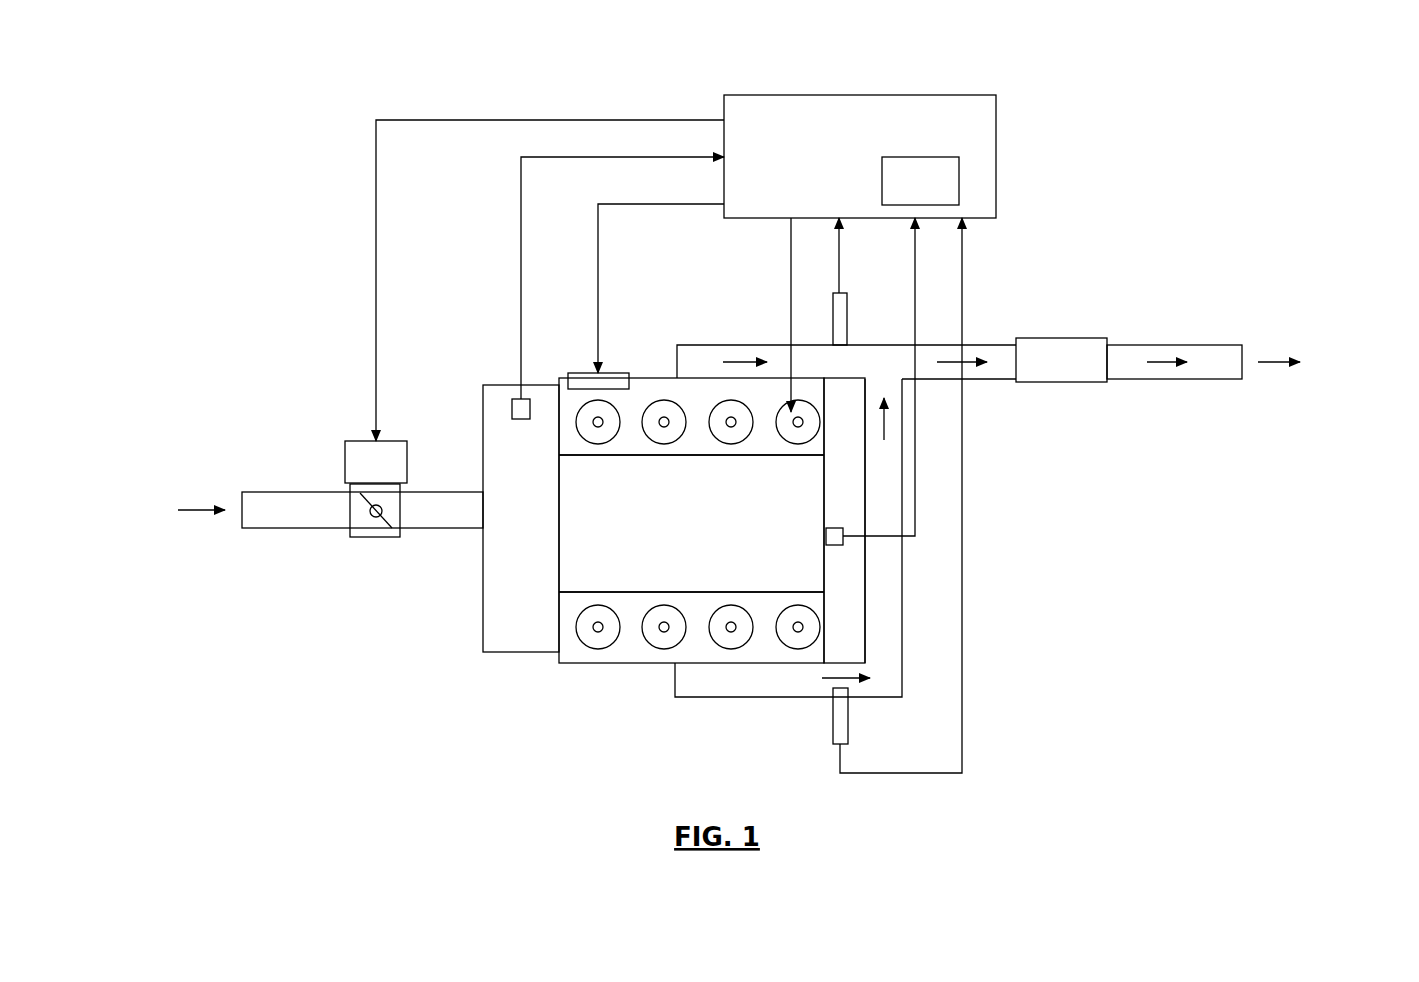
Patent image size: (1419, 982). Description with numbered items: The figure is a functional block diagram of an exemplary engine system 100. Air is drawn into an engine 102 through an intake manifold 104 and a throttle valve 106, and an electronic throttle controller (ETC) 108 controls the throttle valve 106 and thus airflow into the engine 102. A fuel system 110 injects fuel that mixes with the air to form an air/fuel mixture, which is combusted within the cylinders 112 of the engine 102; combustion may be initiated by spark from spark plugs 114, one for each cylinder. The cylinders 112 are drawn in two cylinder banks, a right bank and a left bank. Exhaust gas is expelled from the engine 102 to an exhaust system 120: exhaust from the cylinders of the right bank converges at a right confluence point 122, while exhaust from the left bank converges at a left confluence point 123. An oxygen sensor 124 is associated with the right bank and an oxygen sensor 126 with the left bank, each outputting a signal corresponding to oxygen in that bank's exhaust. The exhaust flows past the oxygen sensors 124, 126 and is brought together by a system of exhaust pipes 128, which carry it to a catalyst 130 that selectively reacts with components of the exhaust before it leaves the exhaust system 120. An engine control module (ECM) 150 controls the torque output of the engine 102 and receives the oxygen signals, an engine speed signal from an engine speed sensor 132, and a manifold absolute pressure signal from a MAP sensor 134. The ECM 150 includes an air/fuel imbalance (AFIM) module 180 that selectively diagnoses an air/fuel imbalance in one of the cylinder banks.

The engine system 100 is at (283, 117).
The engine 102 is at (478, 298).
The intake manifold 104 is at (483, 450).
The throttle valve 106 is at (374, 537).
The electronic throttle controller (ETC) 108 is at (365, 441).
The fuel system 110 is at (604, 373).
The cylinders 112 is at (598, 444).
The spark plugs 114 is at (592, 422).
The exhaust system 120 is at (1064, 264).
The right confluence point 122 is at (688, 337).
The left confluence point 123 is at (680, 706).
The oxygen sensor 124 is at (848, 310).
The oxygen sensor 126 is at (848, 705).
The exhaust pipes 128 is at (992, 345).
The catalyst 130 is at (1065, 338).
The engine speed sensor 132 is at (826, 533).
The MAP sensor 134 is at (512, 404).
The engine control module (ECM) 150 is at (860, 96).
The air/fuel imbalance (AFIM) module 180 is at (920, 158).